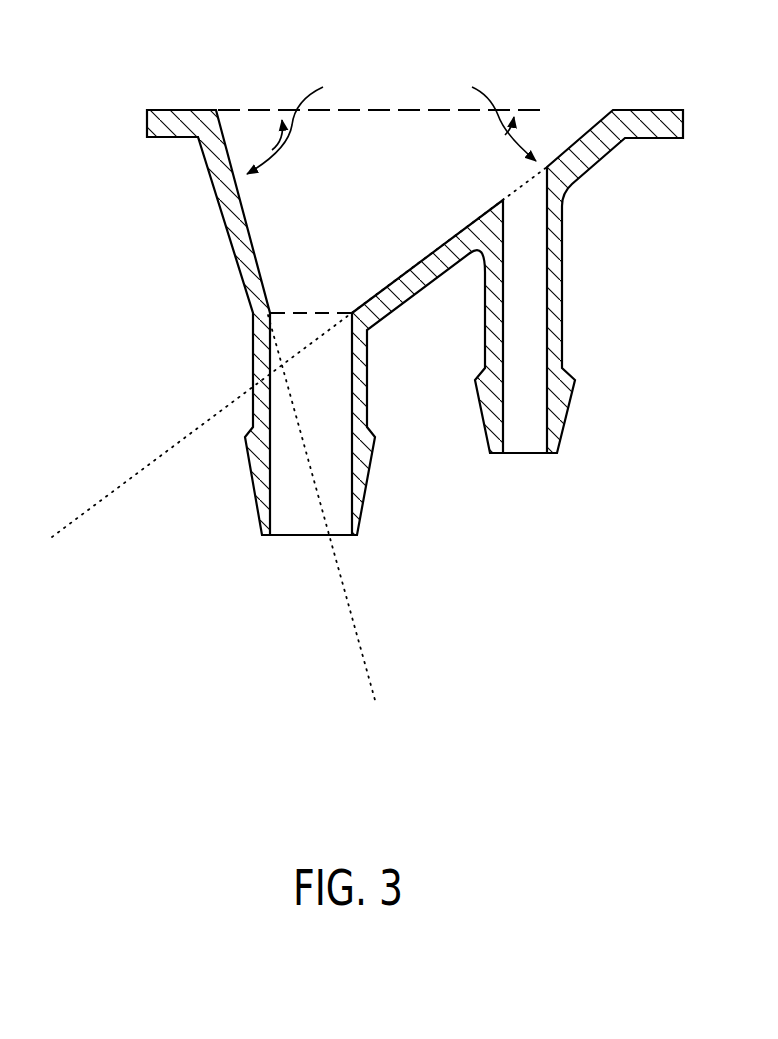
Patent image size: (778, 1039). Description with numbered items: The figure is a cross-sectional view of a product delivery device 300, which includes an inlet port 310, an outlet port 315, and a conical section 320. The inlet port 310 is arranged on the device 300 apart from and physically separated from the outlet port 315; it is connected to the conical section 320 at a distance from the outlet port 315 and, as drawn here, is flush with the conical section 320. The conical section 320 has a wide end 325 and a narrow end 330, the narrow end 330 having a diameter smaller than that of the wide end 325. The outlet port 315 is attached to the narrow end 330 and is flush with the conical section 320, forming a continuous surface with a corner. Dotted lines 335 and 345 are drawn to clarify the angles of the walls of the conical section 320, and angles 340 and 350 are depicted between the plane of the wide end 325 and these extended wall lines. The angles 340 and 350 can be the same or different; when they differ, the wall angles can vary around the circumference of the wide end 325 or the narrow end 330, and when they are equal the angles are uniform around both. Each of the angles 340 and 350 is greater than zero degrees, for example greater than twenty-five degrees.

The product delivery device 300 is at (498, 770).
The inlet port 310 is at (567, 425).
The outlet port 315 is at (373, 467).
The conical section 320 is at (112, 112).
The wide end 325 is at (257, 108).
The narrow end 330 is at (292, 312).
The dotted line 335 is at (373, 673).
The angle 340 is at (304, 117).
The dotted line 345 is at (97, 508).
The angle 350 is at (487, 110).